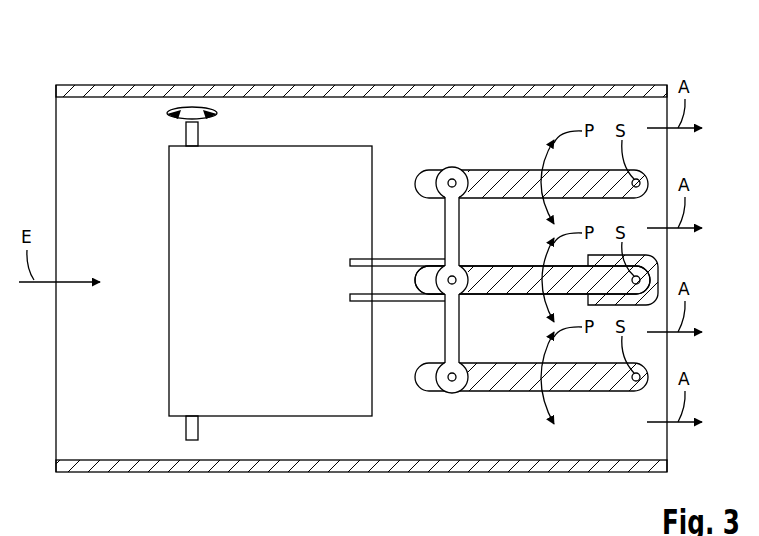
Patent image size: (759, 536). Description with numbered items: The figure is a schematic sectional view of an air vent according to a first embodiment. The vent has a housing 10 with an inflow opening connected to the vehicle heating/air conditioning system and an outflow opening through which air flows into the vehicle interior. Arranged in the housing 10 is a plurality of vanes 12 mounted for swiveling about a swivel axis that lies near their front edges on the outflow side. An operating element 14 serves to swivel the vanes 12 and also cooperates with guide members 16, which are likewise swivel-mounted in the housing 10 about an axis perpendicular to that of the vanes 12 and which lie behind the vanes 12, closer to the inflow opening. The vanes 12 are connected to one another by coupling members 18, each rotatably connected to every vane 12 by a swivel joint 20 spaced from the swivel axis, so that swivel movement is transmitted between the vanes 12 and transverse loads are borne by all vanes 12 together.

The housing 10 is at (408, 91).
The vanes 12 is at (567, 252).
The operating element 14 is at (660, 260).
The guide members 16 is at (298, 146).
The coupling members 18 is at (450, 237).
The swivel joint 20 is at (454, 179).